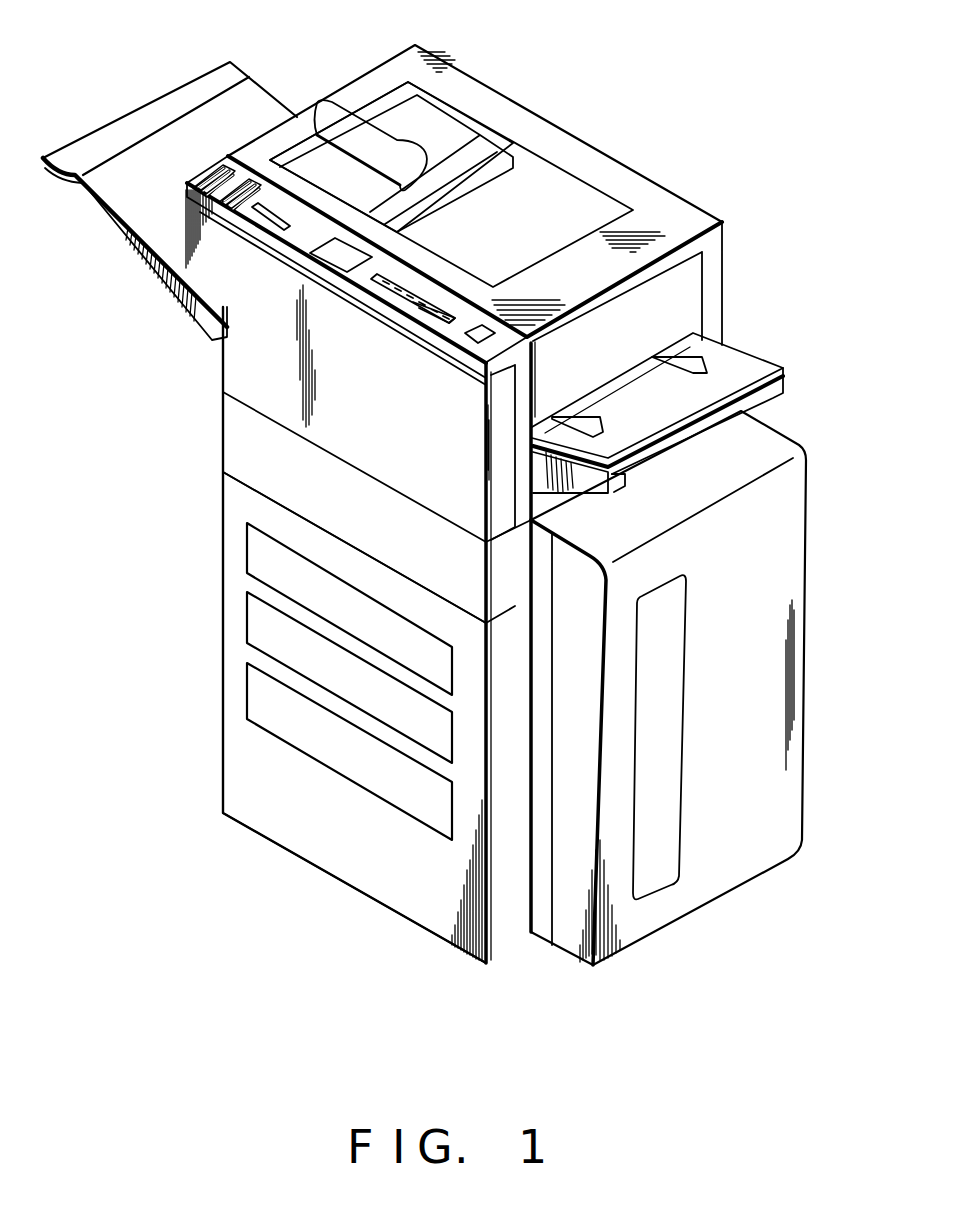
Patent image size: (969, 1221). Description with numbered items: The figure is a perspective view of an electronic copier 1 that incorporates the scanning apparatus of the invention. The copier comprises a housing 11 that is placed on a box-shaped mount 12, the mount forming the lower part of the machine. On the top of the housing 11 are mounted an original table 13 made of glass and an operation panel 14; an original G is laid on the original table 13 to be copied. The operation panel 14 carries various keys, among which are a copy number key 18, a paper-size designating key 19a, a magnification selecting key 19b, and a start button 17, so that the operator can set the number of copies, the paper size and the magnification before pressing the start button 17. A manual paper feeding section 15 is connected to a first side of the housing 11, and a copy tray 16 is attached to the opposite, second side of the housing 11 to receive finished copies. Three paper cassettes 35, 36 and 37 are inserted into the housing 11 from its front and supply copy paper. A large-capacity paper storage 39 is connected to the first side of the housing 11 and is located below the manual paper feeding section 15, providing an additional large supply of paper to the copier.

The electronic copier 1 is at (460, 197).
The housing 11 is at (232, 377).
The box-shaped mount 12 is at (232, 545).
The original table 13 is at (580, 200).
The operation panel 14 is at (290, 240).
The manual paper feeding section 15 is at (763, 370).
The copy tray 16 is at (262, 93).
The start button 17 is at (475, 340).
The copy number key 18 is at (187, 195).
The paper-size designating key 19a is at (392, 290).
The magnification selecting key 19b is at (430, 310).
The paper cassette 35 is at (258, 577).
The paper cassette 36 is at (258, 647).
The paper cassette 37 is at (265, 727).
The large-capacity paper storage 39 is at (793, 570).
The original G is at (432, 120).